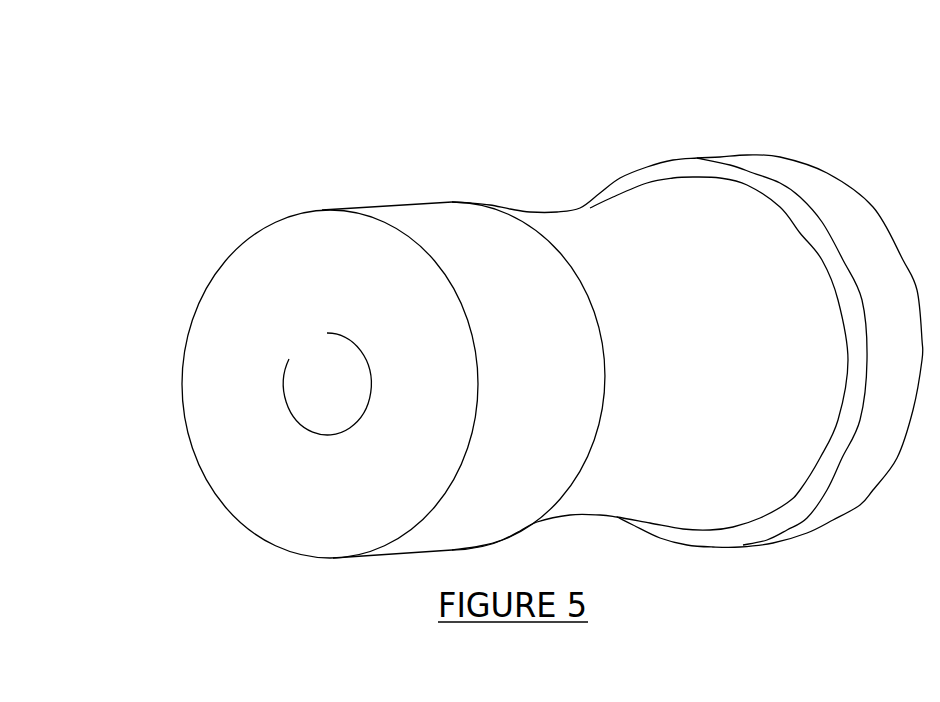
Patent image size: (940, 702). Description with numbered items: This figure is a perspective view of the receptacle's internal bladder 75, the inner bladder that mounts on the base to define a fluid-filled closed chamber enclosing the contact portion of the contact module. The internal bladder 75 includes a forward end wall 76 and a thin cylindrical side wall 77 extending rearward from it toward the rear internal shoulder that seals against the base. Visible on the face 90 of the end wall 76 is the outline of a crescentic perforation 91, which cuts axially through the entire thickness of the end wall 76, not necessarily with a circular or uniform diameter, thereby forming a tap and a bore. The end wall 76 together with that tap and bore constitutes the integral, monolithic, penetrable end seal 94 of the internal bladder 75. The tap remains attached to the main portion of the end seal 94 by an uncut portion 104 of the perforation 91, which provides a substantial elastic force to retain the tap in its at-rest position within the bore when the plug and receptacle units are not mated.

The internal bladder 75 is at (522, 170).
The end wall 76 is at (417, 217).
The thin cylindrical side wall 77 is at (622, 242).
The face 90 is at (333, 503).
The perforation 91 is at (298, 420).
The penetrable end seal 94 is at (407, 178).
The uncut portion 104 is at (297, 337).